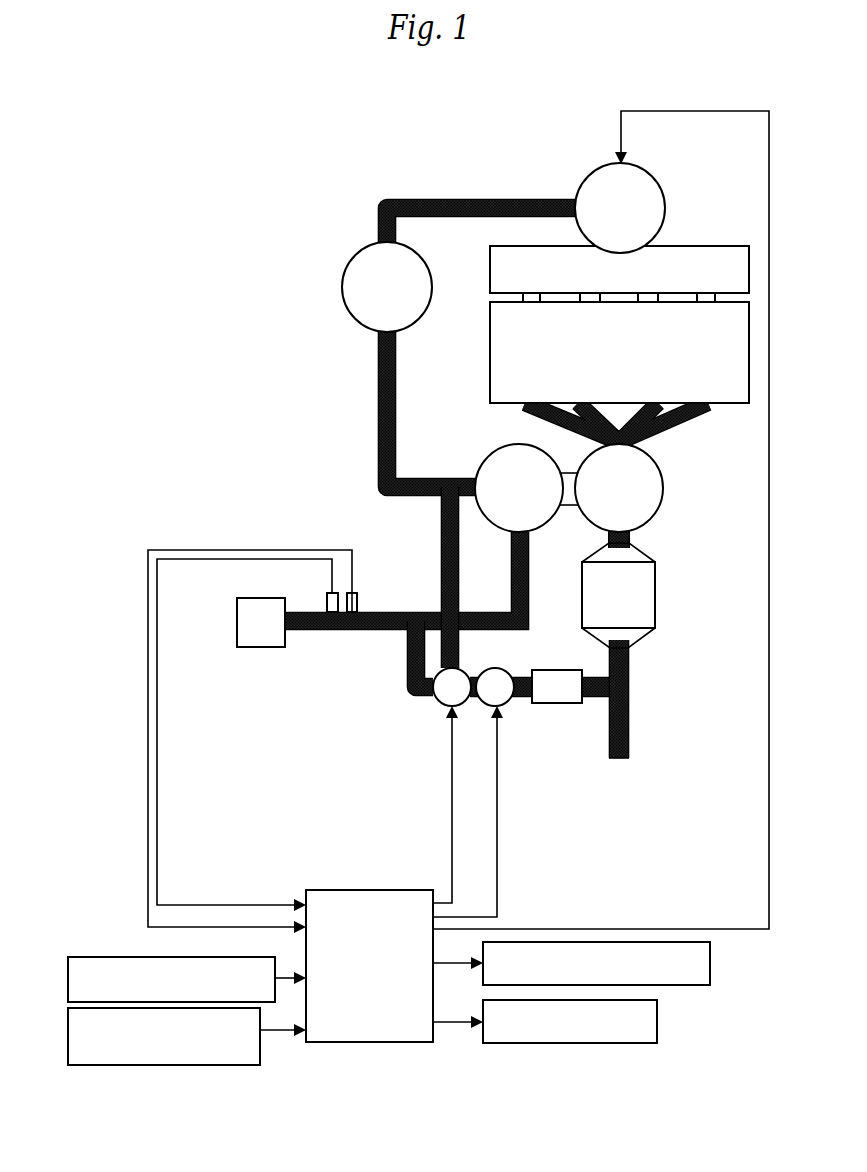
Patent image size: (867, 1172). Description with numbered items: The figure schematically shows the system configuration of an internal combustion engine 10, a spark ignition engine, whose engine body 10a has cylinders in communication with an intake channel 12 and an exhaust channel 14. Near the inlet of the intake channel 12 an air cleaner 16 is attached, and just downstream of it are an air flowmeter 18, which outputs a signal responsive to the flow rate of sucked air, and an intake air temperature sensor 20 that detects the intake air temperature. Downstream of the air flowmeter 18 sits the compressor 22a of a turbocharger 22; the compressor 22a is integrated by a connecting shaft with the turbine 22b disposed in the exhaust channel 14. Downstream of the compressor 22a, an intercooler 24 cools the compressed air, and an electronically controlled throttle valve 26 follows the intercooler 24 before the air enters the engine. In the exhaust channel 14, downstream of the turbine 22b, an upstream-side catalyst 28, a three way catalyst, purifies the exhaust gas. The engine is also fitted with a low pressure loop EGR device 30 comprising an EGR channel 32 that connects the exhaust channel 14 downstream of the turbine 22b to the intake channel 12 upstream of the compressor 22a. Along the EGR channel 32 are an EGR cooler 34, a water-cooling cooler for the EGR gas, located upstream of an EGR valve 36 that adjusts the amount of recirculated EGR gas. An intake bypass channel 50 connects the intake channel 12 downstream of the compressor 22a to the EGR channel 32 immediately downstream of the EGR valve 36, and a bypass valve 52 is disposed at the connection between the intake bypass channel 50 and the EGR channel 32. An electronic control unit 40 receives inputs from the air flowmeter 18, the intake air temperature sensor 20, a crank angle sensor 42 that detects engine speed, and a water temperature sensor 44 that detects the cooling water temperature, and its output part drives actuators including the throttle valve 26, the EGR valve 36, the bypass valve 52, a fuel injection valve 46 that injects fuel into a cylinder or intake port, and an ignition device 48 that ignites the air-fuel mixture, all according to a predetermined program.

The internal combustion engine 10 is at (587, 273).
The engine body 10a is at (490, 362).
The intake channel 12 is at (405, 478).
The exhaust channel 14 is at (630, 729).
The air cleaner 16 is at (237, 620).
The air flowmeter 18 is at (357, 598).
The intake air temperature sensor 20 is at (327, 596).
The turbocharger 22 is at (588, 499).
The compressor 22a is at (488, 462).
The turbine 22b is at (664, 487).
The intercooler 24 is at (342, 288).
The throttle valve 26 is at (650, 173).
The upstream-side catalyst 28 is at (660, 594).
The EGR device 30 is at (526, 720).
The EGR channel 32 is at (597, 678).
The EGR cooler 34 is at (549, 670).
The EGR valve 36 is at (489, 705).
The electronic control unit 40 is at (336, 888).
The crank angle sensor 42 is at (108, 957).
The water temperature sensor 44 is at (126, 1067).
The fuel injection valve 46 is at (711, 962).
The ignition device 48 is at (658, 1021).
The intake bypass channel 50 is at (442, 521).
The bypass valve 52 is at (440, 703).